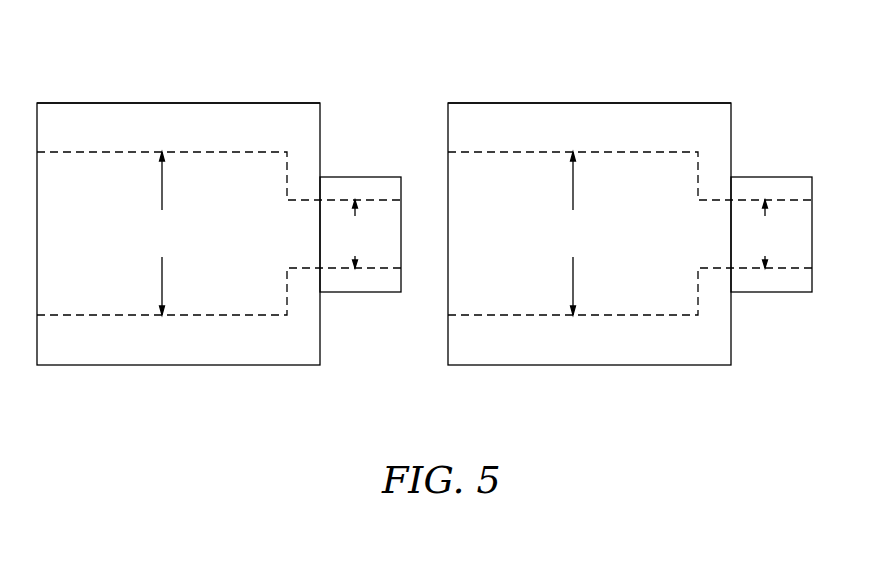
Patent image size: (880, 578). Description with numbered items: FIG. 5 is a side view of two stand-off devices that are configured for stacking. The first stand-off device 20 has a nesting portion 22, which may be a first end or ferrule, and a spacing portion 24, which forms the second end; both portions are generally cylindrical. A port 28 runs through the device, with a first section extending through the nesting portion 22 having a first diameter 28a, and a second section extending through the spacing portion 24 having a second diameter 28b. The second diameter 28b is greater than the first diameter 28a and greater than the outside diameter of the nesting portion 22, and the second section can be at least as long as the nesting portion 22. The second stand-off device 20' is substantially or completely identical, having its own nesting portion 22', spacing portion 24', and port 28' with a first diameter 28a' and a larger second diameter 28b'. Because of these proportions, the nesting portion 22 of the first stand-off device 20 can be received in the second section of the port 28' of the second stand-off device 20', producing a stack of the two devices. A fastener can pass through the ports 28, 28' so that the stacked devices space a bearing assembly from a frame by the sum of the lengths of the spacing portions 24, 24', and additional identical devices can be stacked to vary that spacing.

The stand-off device 20 is at (178, 193).
The nesting portion 22 is at (375, 196).
The spacing portion 24 is at (178, 68).
The port 28 is at (219, 233).
The first diameter 28a is at (355, 234).
The second diameter 28b is at (163, 233).
The second stand-off device 20' is at (589, 193).
The nesting portion of second stand-off device 22' is at (788, 196).
The spacing portion of second stand-off device 24' is at (589, 68).
The port of second stand-off device 28' is at (630, 233).
The first diameter of second stand-off device port 28a' is at (766, 234).
The second diameter of second stand-off device port 28b' is at (574, 233).